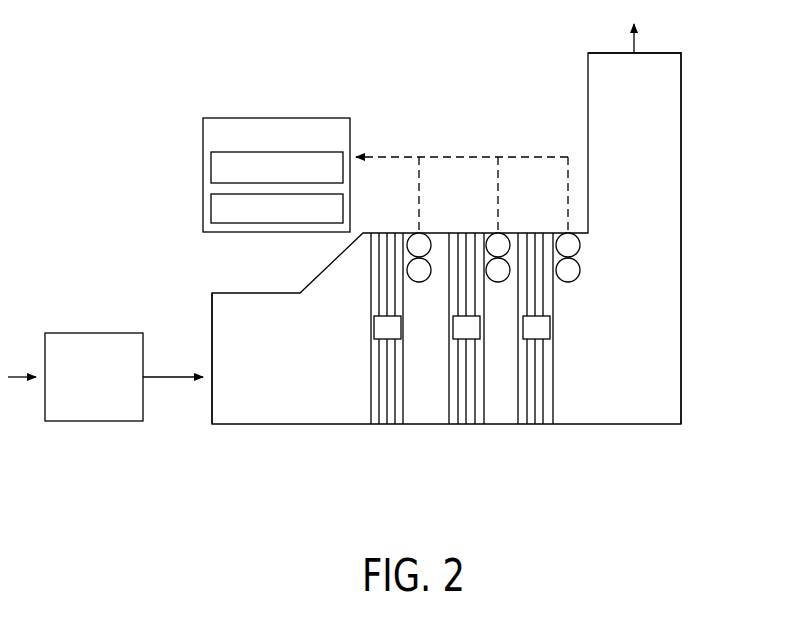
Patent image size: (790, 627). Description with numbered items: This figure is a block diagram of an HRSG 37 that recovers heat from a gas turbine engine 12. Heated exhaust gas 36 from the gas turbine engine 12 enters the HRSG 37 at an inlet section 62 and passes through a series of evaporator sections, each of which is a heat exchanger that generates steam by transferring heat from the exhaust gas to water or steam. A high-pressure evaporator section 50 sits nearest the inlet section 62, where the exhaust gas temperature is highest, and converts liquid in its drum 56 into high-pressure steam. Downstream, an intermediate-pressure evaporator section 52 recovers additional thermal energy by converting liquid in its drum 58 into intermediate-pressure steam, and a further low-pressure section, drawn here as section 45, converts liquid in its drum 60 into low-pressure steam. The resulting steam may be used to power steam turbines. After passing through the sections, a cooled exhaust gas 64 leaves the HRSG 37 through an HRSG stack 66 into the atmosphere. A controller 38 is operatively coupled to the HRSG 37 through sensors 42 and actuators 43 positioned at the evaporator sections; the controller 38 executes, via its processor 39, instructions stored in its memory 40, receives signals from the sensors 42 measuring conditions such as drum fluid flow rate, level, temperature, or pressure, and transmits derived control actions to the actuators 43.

The gas turbine engine 12 is at (93, 333).
The heated exhaust gas 36 is at (177, 380).
The HRSG 37 is at (258, 424).
The controller 38 is at (362, 147).
The processor 39 is at (343, 210).
The memory 40 is at (211, 167).
The sensors 42 is at (428, 236).
The actuators 43 is at (431, 276).
The third heat exchanger 45 is at (530, 424).
The high-pressure evaporator section 50 is at (382, 424).
The intermediate-pressure evaporator section 52 is at (460, 424).
The drum 56 is at (374, 330).
The drum 58 is at (453, 328).
The drum 60 is at (523, 328).
The inlet section 62 is at (212, 362).
The cooled exhaust gas 64 is at (637, 42).
The HRSG stack 66 is at (693, 85).